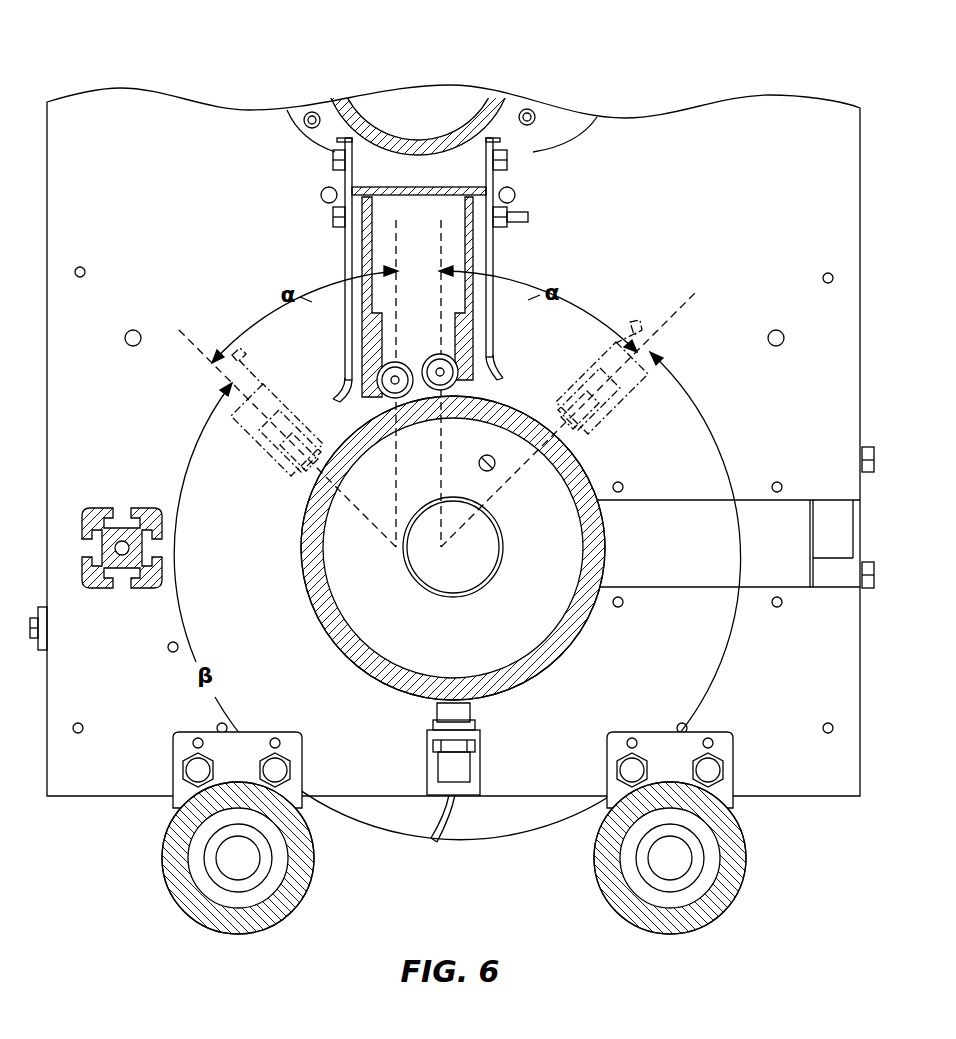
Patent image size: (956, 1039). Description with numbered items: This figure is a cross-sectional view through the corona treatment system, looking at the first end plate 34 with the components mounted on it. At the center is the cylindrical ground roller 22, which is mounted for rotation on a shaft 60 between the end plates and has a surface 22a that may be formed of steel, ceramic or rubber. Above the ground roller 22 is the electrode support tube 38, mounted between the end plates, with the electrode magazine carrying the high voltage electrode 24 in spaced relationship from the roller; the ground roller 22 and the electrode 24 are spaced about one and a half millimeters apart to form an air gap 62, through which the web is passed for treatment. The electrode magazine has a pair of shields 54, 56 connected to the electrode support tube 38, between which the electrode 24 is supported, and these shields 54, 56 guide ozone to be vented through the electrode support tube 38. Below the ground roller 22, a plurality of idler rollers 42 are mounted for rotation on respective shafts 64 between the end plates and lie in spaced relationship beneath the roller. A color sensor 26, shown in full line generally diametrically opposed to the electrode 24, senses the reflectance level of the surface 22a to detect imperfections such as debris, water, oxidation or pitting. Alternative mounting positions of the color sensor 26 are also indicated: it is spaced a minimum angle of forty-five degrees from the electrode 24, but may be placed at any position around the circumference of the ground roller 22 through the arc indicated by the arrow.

The cylindrical ground roller 22 is at (598, 537).
The surface of the ground roller 22a is at (557, 662).
The high voltage electrode 24 is at (380, 362).
The color sensor 26 is at (242, 457).
The first end plate 34 is at (796, 196).
The electrode support tube 38 is at (460, 132).
The idler rollers 42 is at (166, 886).
The shield 54 is at (345, 262).
The shield 56 is at (497, 262).
The shaft 60 is at (503, 540).
The air gap 62 is at (436, 702).
The shafts 64 is at (237, 872).